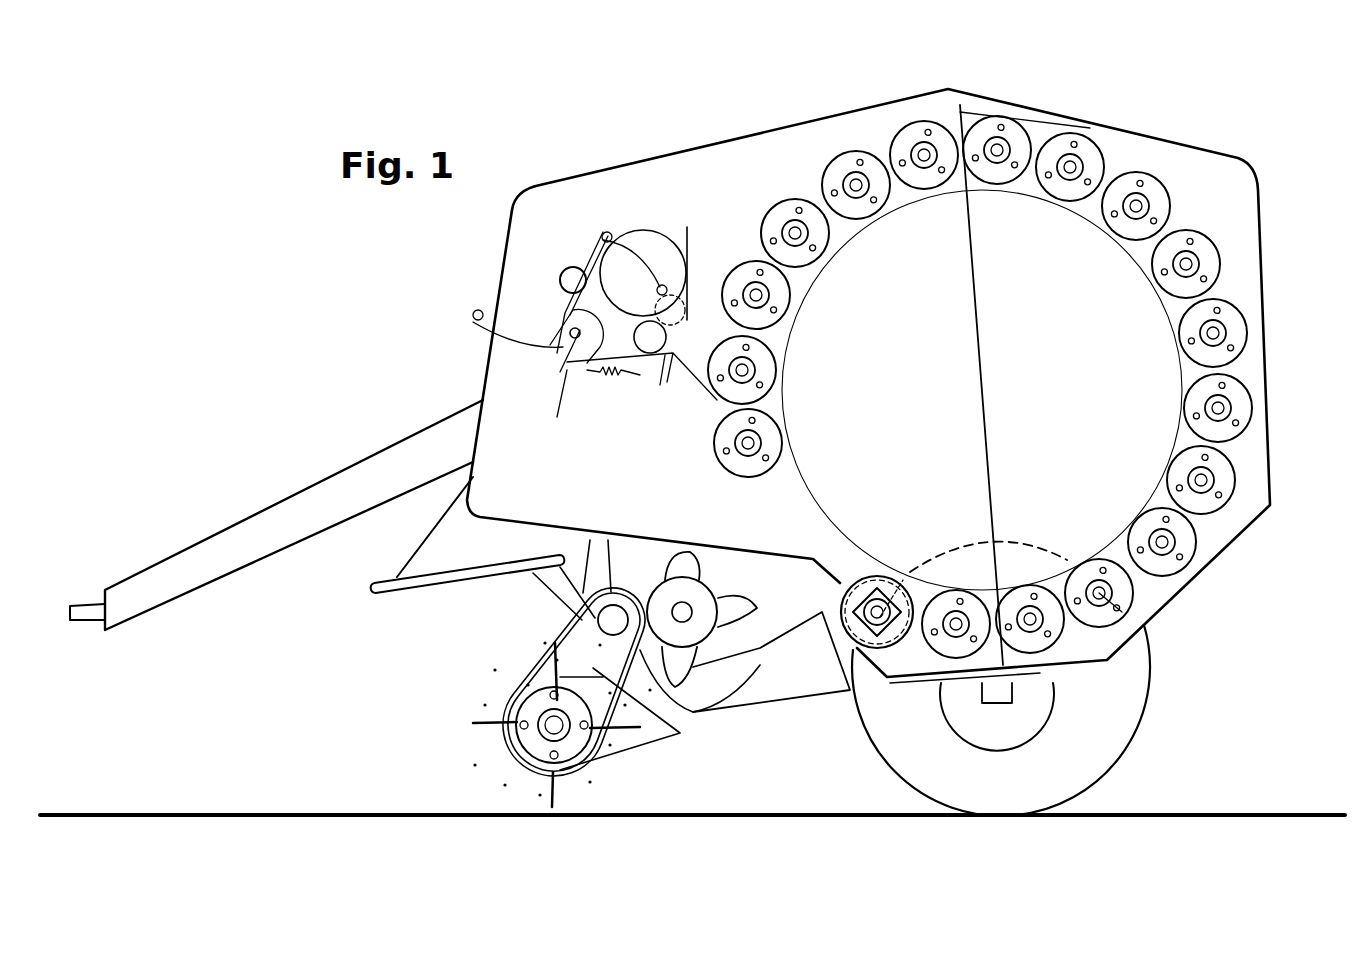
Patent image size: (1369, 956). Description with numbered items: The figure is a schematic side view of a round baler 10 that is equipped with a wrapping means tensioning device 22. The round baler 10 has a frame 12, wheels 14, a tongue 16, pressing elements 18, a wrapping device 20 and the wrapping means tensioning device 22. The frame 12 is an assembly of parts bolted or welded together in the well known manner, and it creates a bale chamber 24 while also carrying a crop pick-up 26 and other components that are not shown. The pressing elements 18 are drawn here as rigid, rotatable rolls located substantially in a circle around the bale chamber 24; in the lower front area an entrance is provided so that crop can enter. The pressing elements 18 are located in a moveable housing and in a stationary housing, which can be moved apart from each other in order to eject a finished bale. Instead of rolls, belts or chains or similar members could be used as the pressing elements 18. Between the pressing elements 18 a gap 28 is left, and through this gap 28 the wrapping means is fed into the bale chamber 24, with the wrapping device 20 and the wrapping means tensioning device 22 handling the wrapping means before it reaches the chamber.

The round baler 10 is at (520, 92).
The frame 12 is at (722, 142).
The wheels 14 is at (1130, 700).
The tongue 16 is at (240, 520).
The pressing elements 18 is at (902, 134).
The wrapping device 20 is at (630, 195).
The wrapping means tensioning device 22 is at (610, 406).
The bale chamber 24 is at (982, 390).
The crop pick-up 26 is at (475, 754).
The gap 28 is at (716, 411).